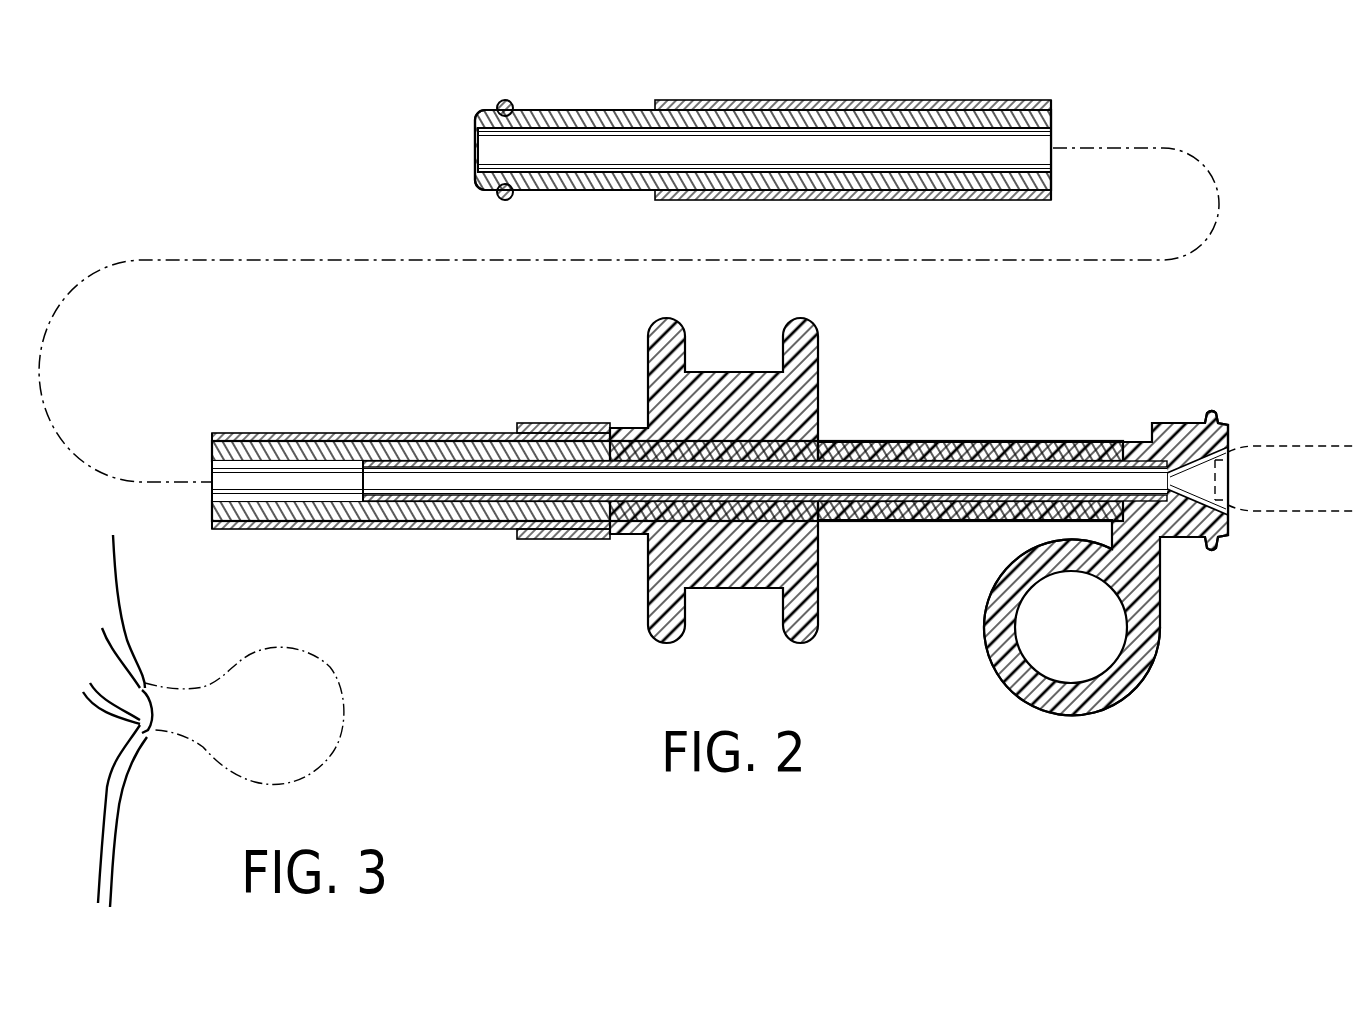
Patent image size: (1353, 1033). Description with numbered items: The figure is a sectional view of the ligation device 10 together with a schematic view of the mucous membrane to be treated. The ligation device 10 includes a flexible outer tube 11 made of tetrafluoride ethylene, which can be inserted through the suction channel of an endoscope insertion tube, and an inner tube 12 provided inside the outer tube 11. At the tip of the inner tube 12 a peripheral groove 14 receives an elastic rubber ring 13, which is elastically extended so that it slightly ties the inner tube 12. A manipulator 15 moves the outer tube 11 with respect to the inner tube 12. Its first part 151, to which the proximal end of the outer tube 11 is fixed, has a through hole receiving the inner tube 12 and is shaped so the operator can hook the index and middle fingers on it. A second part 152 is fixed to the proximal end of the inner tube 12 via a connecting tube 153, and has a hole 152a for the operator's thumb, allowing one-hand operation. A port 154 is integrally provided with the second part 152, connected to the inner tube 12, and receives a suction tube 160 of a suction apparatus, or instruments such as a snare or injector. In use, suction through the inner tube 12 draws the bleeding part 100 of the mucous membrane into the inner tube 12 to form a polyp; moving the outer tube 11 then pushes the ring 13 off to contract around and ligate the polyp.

In FIG. 2, the ligation device 10 is at (1122, 107).
In FIG. 2, the outer tube 11 is at (928, 102).
In FIG. 2, the inner tube 12 is at (586, 114).
In FIG. 2, the ring 13 is at (503, 101).
In FIG. 2, the peripheral groove 14 is at (483, 118).
In FIG. 2, the manipulator 15 is at (997, 382).
In FIG. 2, the first part 151 is at (806, 348).
In FIG. 2, the second part 152 is at (1106, 648).
In FIG. 2, the hole 152a is at (1033, 652).
In FIG. 2, the connecting tube 153 is at (883, 498).
In FIG. 2, the port 154 is at (1226, 426).
In FIG. 2, the suction tube 160 is at (1290, 512).
In FIG. 3, the bleeding part 100 is at (152, 735).